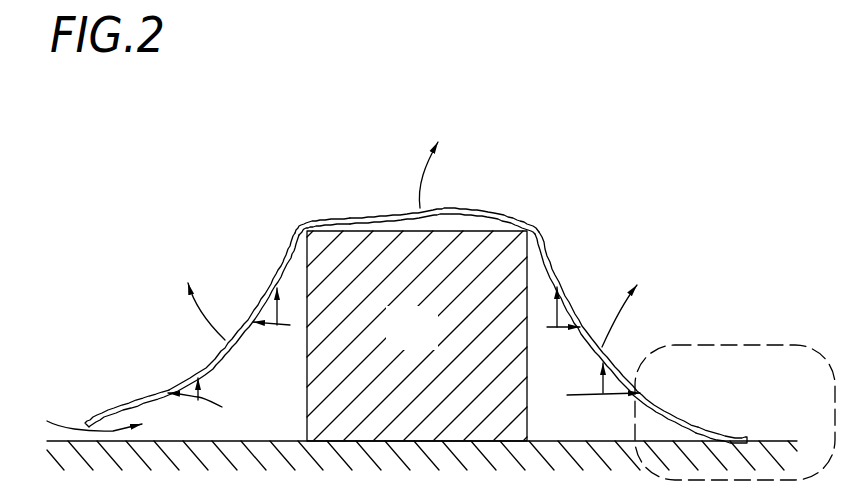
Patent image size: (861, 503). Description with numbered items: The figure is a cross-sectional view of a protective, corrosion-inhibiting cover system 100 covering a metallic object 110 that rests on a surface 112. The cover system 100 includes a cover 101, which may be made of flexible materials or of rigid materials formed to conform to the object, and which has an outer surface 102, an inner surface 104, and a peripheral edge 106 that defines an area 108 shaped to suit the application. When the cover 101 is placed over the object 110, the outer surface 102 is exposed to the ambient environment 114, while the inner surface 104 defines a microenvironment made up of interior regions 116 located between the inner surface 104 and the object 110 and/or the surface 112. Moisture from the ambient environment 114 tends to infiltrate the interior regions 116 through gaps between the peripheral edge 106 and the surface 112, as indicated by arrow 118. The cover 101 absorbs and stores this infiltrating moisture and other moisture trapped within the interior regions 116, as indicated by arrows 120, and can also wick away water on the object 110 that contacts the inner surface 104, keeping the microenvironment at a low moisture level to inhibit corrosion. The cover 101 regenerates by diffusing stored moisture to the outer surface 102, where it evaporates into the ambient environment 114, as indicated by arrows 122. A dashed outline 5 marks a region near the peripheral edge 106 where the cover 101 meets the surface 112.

The protective, corrosion-inhibiting cover system 100 is at (144, 232).
The cover 101 is at (549, 237).
The outer surface 102 is at (297, 228).
The inner surface 104 is at (288, 257).
The peripheral edge 106 is at (87, 425).
The area 108 is at (503, 211).
The metallic object 110 is at (433, 344).
The surface 112 is at (780, 443).
The ambient environment 114 is at (727, 266).
The interior regions 116 is at (461, 225).
The arrow 118 is at (62, 418).
The arrows 120 is at (290, 327).
The arrows 122 is at (419, 182).
The detail region (FIG. 5) 5 is at (785, 345).